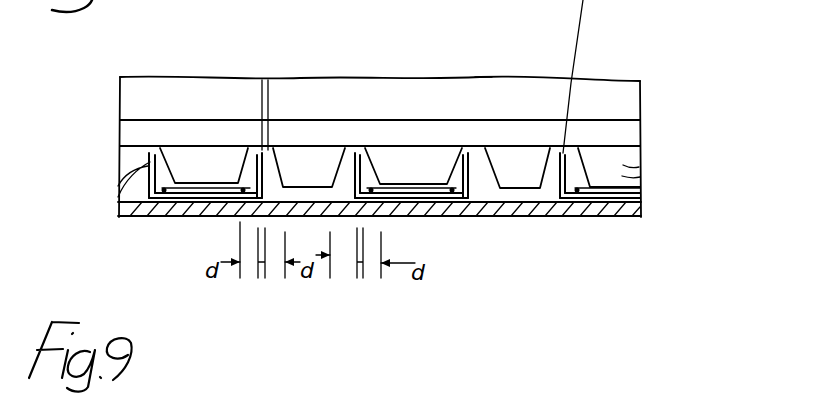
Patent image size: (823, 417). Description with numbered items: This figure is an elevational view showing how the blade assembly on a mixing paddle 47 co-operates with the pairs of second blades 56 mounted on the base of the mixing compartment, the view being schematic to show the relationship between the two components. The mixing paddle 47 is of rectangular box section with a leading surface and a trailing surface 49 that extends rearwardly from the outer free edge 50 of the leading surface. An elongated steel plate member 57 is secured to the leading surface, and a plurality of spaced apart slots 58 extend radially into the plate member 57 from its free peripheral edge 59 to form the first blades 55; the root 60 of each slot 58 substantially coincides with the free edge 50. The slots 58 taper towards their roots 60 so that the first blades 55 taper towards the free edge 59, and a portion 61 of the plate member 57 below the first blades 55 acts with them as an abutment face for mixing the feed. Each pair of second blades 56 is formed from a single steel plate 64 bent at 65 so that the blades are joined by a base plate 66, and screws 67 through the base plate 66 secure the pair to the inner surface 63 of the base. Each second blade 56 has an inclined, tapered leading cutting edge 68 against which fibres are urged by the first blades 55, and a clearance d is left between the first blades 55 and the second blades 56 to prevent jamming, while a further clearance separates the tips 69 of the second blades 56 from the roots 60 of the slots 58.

The mixing paddle 47 is at (268, 80).
The trailing surface 49 is at (118, 165).
The outer free edge 50 is at (177, 150).
The first blade 55 is at (207, 157).
The second blade 56 is at (286, 135).
The plate member 57 is at (645, 178).
The slot 58 is at (362, 150).
The free peripheral edge 59 is at (192, 210).
The root 60 is at (547, 68).
The portion of plate member 61 is at (480, 125).
The inner surface of base 63 is at (607, 100).
The single plate 64 is at (670, 296).
The bend 65 is at (150, 205).
The base plate 66 is at (167, 210).
The screw 67 is at (186, 160).
The leading cutting edge 68 is at (286, 176).
The tip 69 is at (147, 153).